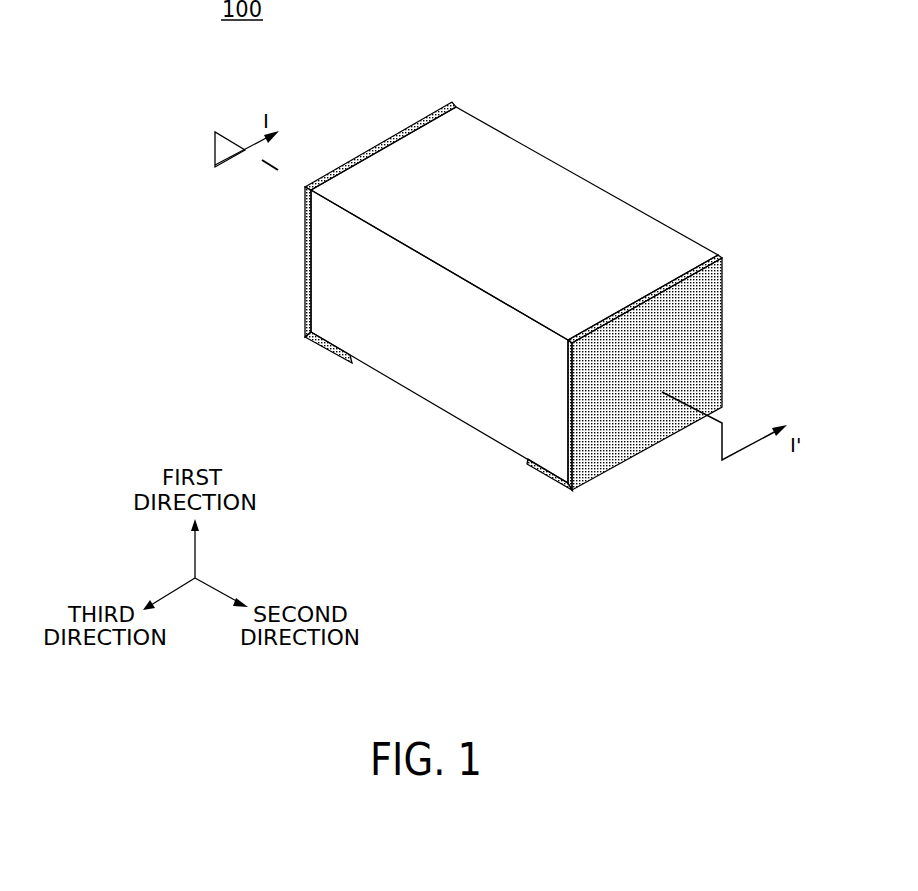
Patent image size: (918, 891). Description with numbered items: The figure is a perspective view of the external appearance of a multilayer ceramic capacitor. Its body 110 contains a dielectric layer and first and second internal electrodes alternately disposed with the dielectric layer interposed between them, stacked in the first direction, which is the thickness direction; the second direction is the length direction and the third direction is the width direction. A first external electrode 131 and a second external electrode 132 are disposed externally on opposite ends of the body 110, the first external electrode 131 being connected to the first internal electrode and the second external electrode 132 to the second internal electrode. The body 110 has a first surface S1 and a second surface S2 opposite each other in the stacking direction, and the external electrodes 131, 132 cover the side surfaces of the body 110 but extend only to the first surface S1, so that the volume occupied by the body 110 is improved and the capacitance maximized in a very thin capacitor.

The body 110 is at (640, 241).
The first external electrode 131 is at (364, 143).
The second external electrode 132 is at (718, 253).
The first surface S1 is at (403, 398).
The second surface S2 is at (550, 222).